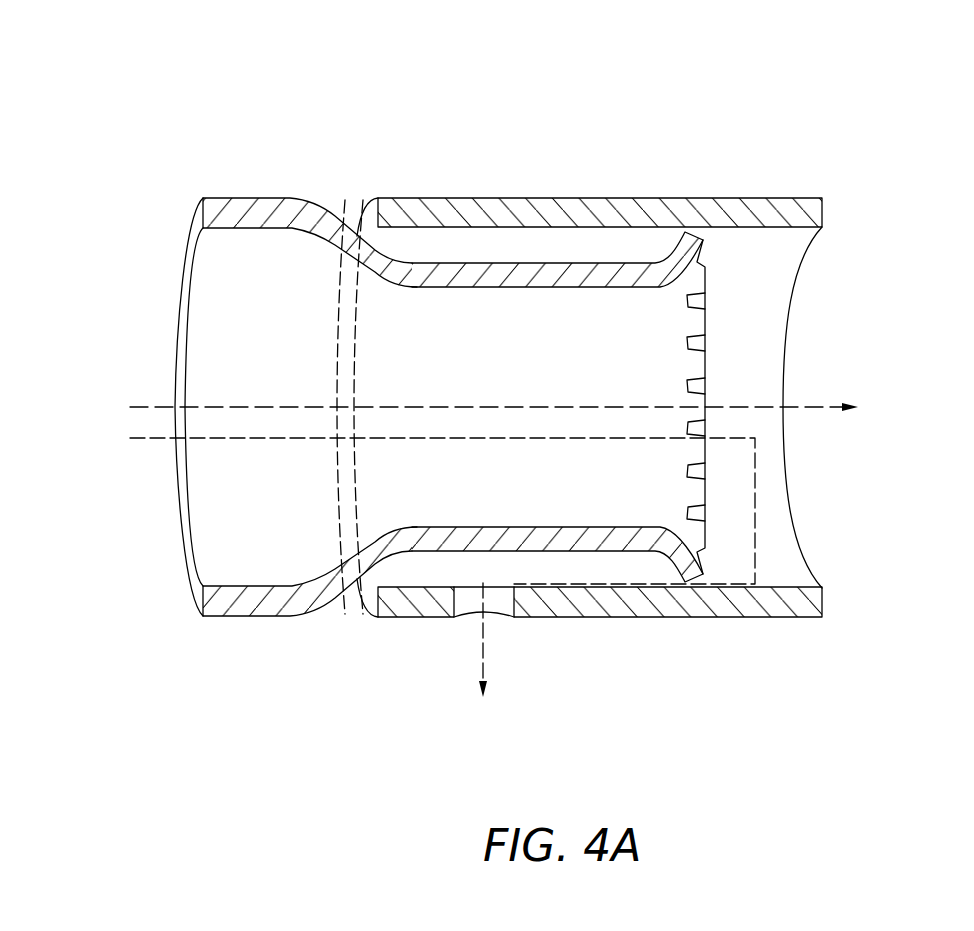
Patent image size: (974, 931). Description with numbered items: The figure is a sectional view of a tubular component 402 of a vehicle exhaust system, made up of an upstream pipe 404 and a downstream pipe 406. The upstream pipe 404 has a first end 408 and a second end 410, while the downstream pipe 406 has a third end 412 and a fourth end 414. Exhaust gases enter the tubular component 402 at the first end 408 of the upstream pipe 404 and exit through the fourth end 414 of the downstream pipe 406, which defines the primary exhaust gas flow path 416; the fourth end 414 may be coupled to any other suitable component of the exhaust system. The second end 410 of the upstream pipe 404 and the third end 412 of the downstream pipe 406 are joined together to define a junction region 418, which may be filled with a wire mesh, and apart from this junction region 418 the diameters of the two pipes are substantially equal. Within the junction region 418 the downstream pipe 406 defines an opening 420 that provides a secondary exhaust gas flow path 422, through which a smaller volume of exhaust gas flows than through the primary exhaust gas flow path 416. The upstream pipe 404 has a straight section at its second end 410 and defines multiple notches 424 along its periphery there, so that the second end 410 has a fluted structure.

The tubular component 402 is at (257, 117).
The upstream pipe 404 is at (223, 630).
The downstream pipe 406 is at (658, 622).
The first end 408 is at (175, 458).
The second end 410 is at (675, 317).
The third end 412 is at (357, 222).
The fourth end 414 is at (802, 262).
The primary exhaust gas flow path 416 is at (789, 405).
The junction region 418 is at (720, 193).
The opening 420 is at (467, 618).
The secondary exhaust gas flow path 422 is at (487, 650).
The notches 424 is at (688, 427).